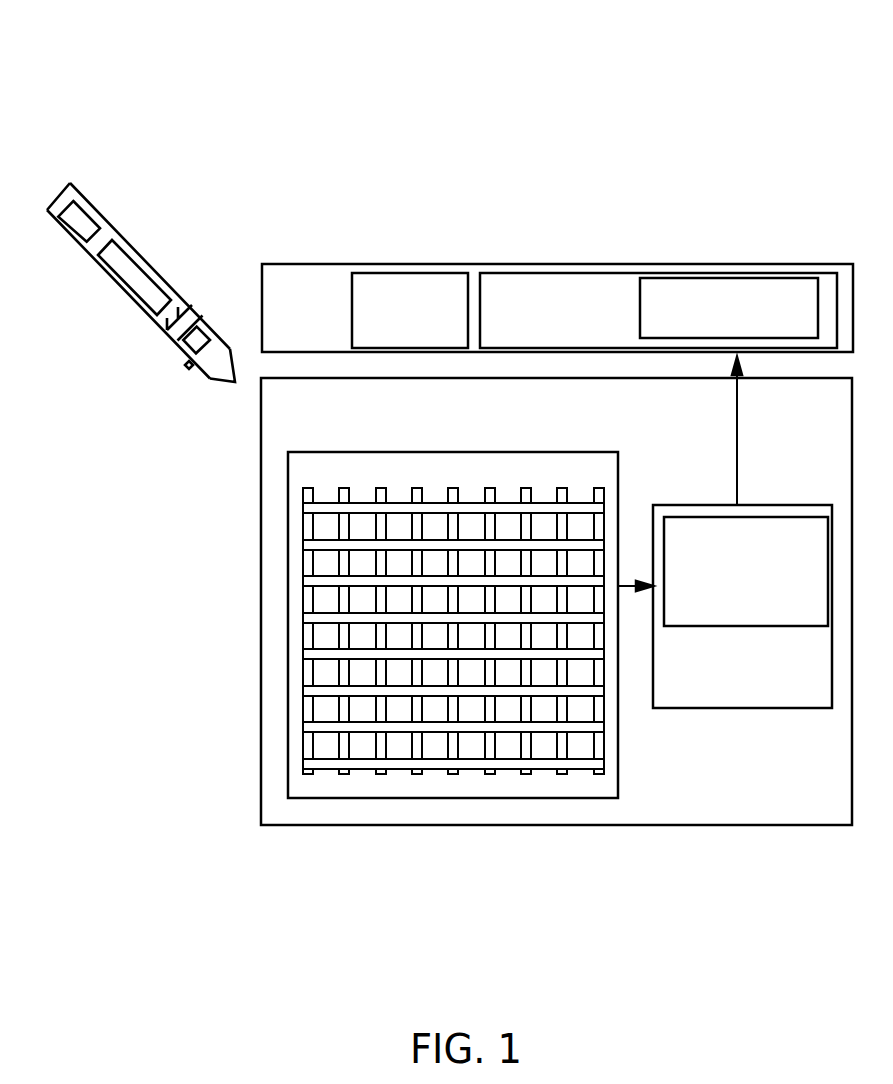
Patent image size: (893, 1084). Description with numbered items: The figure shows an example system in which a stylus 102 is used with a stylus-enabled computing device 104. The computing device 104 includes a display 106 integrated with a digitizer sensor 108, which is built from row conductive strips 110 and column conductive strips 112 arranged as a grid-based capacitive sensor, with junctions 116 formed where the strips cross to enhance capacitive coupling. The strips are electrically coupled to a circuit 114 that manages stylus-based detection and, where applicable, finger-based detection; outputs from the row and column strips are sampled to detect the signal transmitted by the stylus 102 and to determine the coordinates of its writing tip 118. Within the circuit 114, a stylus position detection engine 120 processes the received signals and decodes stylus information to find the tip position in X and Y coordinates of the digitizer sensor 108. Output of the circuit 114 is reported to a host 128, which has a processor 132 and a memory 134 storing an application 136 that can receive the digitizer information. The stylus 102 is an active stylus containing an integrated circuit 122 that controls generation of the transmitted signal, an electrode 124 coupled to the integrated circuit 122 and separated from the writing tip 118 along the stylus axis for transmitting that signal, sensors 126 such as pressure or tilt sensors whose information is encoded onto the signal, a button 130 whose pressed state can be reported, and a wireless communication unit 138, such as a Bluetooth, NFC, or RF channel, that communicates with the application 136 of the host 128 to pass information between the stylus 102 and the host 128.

The stylus 102 is at (137, 319).
The stylus-enabled computing device 104 is at (495, 436).
The display 106 is at (538, 452).
The digitizer sensor 108 is at (442, 654).
The row conductive strips 110 is at (313, 506).
The column conductive strips 112 is at (340, 760).
The circuit 114 is at (760, 698).
The junctions 116 is at (340, 580).
The writing tip 118 is at (222, 370).
The stylus position detection engine 120 is at (763, 620).
The integrated circuit 122 is at (118, 258).
The electrode 124 is at (193, 303).
The sensor(s) 126 is at (182, 346).
The host 128 is at (305, 322).
The button 130 is at (191, 366).
The processor 132 is at (428, 328).
The memory 134 is at (545, 328).
The application 136 is at (745, 330).
The wireless communication unit 138 is at (73, 223).